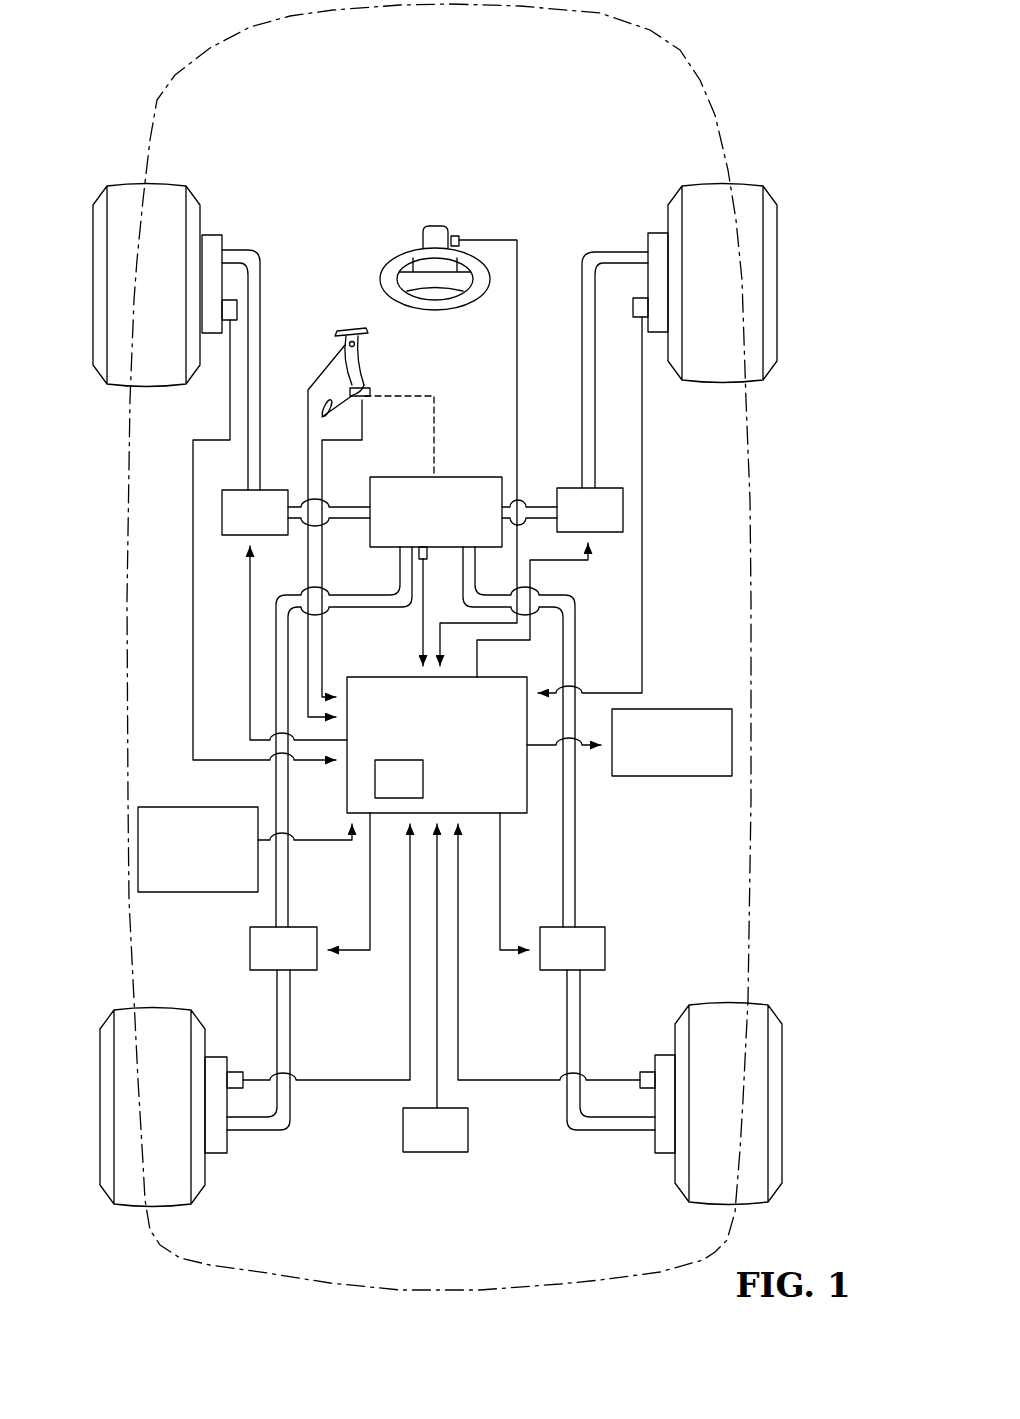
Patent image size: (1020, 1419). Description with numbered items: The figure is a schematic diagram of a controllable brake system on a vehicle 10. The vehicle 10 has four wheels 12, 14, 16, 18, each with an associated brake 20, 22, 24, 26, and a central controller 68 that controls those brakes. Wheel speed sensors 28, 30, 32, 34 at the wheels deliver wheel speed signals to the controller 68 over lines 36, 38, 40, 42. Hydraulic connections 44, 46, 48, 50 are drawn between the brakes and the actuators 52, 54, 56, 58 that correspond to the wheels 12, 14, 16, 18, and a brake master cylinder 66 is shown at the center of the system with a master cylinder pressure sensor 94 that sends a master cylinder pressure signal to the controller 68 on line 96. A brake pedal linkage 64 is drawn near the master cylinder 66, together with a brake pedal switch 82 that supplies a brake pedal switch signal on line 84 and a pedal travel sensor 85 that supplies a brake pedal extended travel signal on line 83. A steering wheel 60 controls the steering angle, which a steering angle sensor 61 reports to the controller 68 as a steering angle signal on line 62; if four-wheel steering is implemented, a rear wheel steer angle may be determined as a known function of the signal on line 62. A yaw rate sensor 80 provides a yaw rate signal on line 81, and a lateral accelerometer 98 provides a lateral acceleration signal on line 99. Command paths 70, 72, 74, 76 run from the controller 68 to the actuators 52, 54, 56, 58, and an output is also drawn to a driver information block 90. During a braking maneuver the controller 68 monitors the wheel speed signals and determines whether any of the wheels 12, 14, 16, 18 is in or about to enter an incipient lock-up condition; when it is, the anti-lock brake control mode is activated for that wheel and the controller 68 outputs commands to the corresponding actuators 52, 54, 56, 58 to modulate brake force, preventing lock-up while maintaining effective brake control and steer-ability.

The vehicle 10 is at (674, 48).
The vehicle wheel 12 is at (122, 200).
The vehicle wheel 14 is at (750, 195).
The vehicle wheel 16 is at (128, 1190).
The vehicle wheel 18 is at (760, 1035).
The brake 20 is at (210, 268).
The brake 22 is at (658, 245).
The brake 24 is at (220, 1150).
The brake 26 is at (660, 1148).
The wheel speed sensor 28 is at (238, 310).
The wheel speed sensor 30 is at (628, 305).
The wheel speed sensor 32 is at (240, 1078).
The wheel speed sensor 34 is at (642, 1078).
The wheel speed signal line 36 is at (193, 515).
The wheel speed signal line 38 is at (645, 460).
The wheel speed signal line 40 is at (345, 1082).
The wheel speed signal line 42 is at (508, 1082).
The left front brake line 44 is at (258, 252).
The right front brake line 46 is at (588, 383).
The left rear brake line 48 is at (290, 1003).
The right rear brake line 50 is at (566, 1010).
The actuator 52 is at (222, 528).
The actuator 54 is at (623, 503).
The actuator 56 is at (250, 947).
The actuator 58 is at (605, 945).
The steering wheel 60 is at (420, 258).
The steering angle sensor 61 is at (458, 236).
The steering angle signal line 62 is at (517, 238).
The brake pedal linkage 64 is at (340, 400).
The brake master cylinder 66 is at (482, 477).
The controller 68 is at (505, 800).
The left front actuator control line 70 is at (248, 598).
The right front actuator control line 72 is at (565, 560).
The left rear actuator control line 74 is at (371, 905).
The right rear actuator control line 76 is at (500, 880).
The yaw rate sensor 80 is at (155, 815).
The yaw rate signal line 81 is at (335, 842).
The brake pedal switch 82 is at (368, 398).
The brake pedal extended travel signal line 83 is at (308, 405).
The brake pedal switch signal line 84 is at (323, 628).
The pedal travel sensor 85 is at (340, 345).
The driver information display 90 is at (697, 709).
The master cylinder pressure sensor 94 is at (428, 558).
The master cylinder pressure signal line 96 is at (423, 640).
The lateral accelerometer 98 is at (440, 1152).
The lateral acceleration signal line 99 is at (437, 1088).